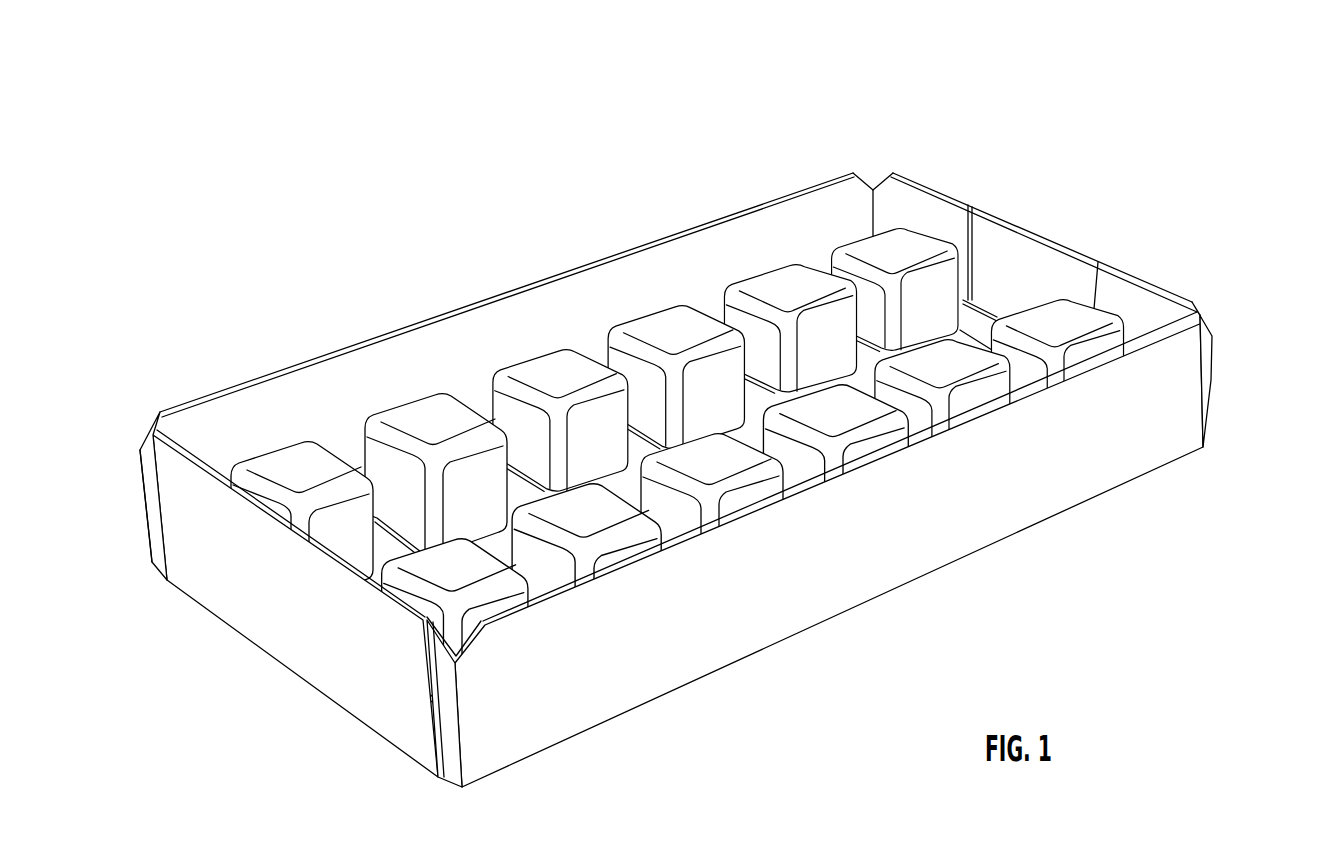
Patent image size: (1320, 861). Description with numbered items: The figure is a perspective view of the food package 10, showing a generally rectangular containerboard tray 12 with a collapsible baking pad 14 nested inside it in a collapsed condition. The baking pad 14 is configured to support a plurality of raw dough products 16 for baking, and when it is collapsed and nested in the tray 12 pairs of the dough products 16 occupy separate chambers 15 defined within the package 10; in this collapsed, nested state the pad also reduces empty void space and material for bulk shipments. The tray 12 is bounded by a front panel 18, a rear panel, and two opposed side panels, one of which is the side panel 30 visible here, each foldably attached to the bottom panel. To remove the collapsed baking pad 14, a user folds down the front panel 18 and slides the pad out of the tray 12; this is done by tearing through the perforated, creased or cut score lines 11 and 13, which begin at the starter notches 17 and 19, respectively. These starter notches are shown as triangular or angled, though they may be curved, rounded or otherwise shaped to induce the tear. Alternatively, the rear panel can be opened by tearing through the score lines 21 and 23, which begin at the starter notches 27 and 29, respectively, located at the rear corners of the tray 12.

The food package 10 is at (685, 443).
The score line 11 is at (142, 516).
The tray 12 is at (685, 451).
The score line 13 is at (460, 720).
The collapsible baking pad 14 is at (977, 325).
The chamber 15 is at (545, 567).
The dough products 16 is at (578, 508).
The starter notch 17 is at (153, 433).
The front panel 18 is at (347, 662).
The starter notch 19 is at (456, 668).
The score line 21 is at (873, 203).
The score line 23 is at (1211, 380).
The starter notch 27 is at (878, 187).
The starter notch 29 is at (1202, 317).
The side panel 30 is at (829, 549).